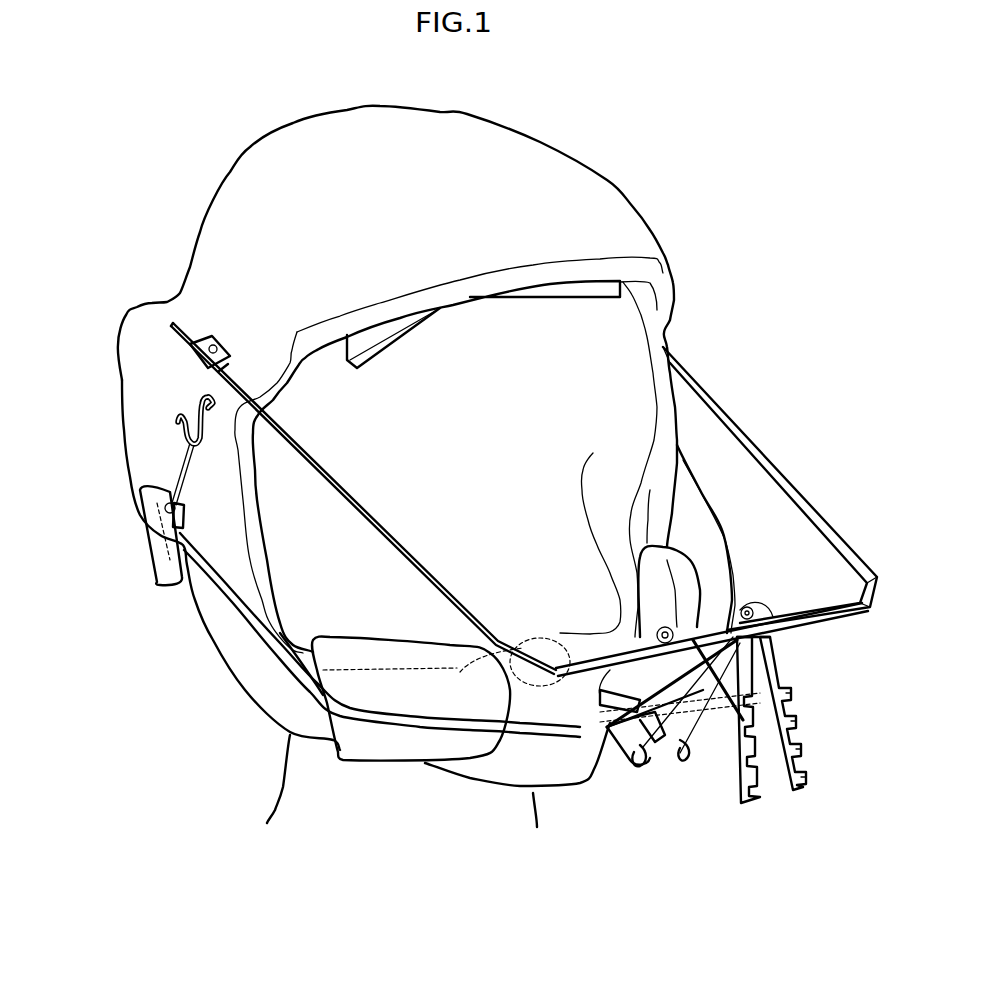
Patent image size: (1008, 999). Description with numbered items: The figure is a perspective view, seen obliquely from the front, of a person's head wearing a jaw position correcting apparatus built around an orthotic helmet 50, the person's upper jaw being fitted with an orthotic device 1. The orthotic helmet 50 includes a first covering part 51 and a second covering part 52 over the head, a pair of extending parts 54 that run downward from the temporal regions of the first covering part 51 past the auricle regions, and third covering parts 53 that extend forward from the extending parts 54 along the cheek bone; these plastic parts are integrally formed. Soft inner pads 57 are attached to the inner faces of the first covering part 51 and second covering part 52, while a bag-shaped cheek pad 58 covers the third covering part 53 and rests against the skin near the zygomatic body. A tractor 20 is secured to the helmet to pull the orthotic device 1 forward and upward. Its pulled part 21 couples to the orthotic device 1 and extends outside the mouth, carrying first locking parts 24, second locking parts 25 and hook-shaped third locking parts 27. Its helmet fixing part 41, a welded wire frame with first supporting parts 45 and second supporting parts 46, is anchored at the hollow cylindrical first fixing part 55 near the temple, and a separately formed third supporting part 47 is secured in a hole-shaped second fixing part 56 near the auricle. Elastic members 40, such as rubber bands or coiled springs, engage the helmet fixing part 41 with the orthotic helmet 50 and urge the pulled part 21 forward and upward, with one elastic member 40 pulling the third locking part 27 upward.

The orthotic device 1 is at (527, 690).
The tractor 20 is at (790, 400).
The pulled part 21 is at (610, 767).
The first locking parts 24 is at (650, 763).
The second locking parts 25 is at (612, 745).
The third locking parts 27 is at (165, 502).
The elastic members 40 is at (760, 650).
The helmet fixing part 41 is at (805, 485).
The first supporting parts 45 is at (745, 610).
The second supporting parts 46 is at (770, 718).
The third supporting parts 47 is at (177, 428).
The orthotic helmet 50 is at (203, 155).
The first covering part 51 is at (470, 213).
The second covering part 52 is at (137, 557).
The third covering parts 53 is at (373, 742).
The extending parts 54 is at (210, 627).
The first fixing part 55 is at (183, 351).
The second fixing parts 56 is at (190, 388).
The inner pads 57 is at (347, 370).
The cheek pads 58 is at (413, 763).